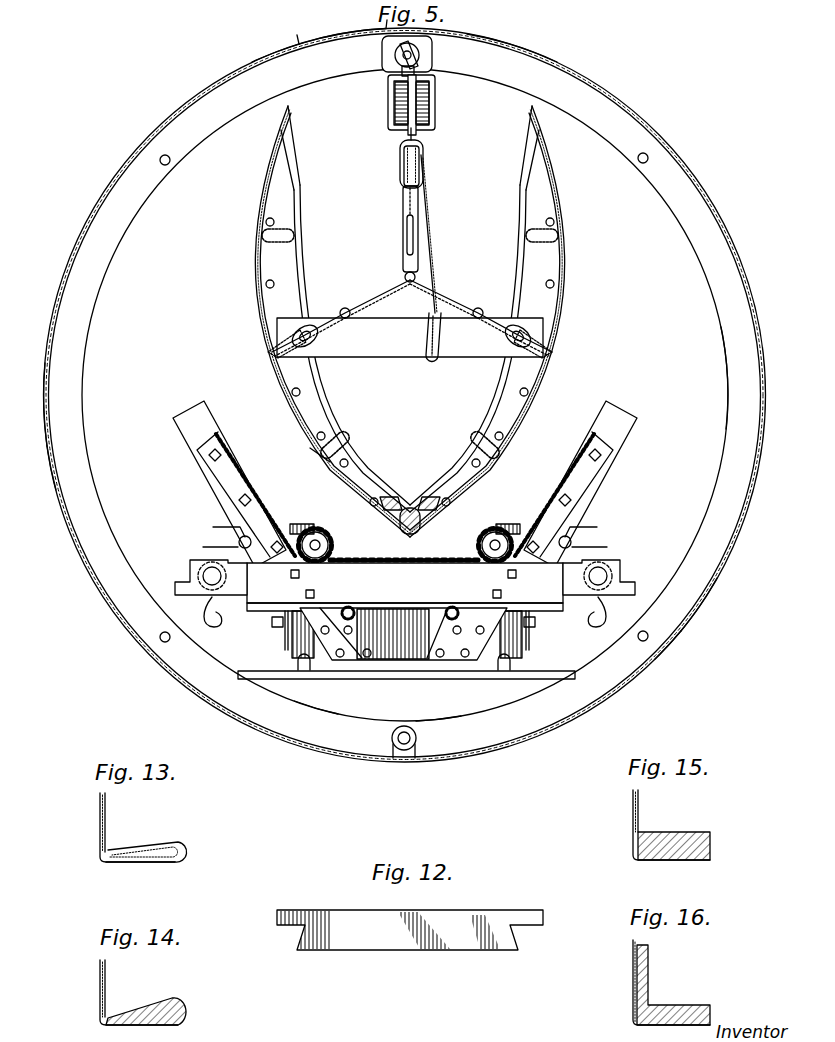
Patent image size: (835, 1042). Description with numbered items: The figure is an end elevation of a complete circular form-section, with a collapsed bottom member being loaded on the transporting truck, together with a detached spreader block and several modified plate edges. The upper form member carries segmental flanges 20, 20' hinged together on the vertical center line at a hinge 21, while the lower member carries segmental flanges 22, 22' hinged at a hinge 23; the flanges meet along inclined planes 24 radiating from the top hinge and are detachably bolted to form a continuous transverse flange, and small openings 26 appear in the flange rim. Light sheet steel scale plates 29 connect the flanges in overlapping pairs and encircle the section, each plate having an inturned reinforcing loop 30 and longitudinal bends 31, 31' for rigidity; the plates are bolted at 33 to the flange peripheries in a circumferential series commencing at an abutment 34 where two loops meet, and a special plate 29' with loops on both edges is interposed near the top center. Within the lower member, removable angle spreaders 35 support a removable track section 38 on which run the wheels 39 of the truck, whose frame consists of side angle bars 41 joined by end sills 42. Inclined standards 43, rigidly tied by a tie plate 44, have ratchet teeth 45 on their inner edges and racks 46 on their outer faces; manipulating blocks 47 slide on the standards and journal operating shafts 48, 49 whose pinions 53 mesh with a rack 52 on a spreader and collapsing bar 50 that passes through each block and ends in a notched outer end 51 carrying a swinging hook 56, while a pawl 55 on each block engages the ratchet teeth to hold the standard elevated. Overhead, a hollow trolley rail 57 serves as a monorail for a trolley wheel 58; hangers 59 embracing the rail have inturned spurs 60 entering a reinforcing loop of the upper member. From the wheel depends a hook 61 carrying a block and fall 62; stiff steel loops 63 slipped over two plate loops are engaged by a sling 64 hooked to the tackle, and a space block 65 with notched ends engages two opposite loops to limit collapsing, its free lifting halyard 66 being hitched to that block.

In FIG. 5, the segmental flange 20 is at (405, 395).
In FIG. 5, the segmental flange 20' is at (708, 378).
In FIG. 5, the hinge 21 is at (394, 55).
In FIG. 5, the segmental flange 22 is at (326, 321).
In FIG. 5, the segmental flange 22' is at (494, 321).
In FIG. 5, the hinge 23 is at (403, 749).
In FIG. 5, the inclined plane 24 is at (298, 180).
In FIG. 5, the hole 26 is at (170, 166).
In FIG. 5, the scale plate 29 is at (417, 395).
In FIG. 13, the scale plate 29 is at (118, 827).
In FIG. 14, the scale plate 29 is at (120, 992).
In FIG. 15, the scale plate 29 is at (652, 825).
In FIG. 16, the scale plate 29 is at (651, 982).
In FIG. 5, the special plate 29' is at (512, 40).
In FIG. 5, the reinforcing loop 30 is at (422, 60).
In FIG. 13, the reinforcing loop 30 is at (180, 846).
In FIG. 14, the reinforcing loop 30 is at (180, 1012).
In FIG. 15, the reinforcing loop 30 is at (712, 855).
In FIG. 16, the reinforcing loop 30 is at (712, 1018).
In FIG. 5, the longitudinal bend 31 is at (385, 323).
In FIG. 5, the longitudinal bend 31' is at (373, 341).
In FIG. 5, the bolt 33 is at (301, 392).
In FIG. 5, the abutment point 34 is at (300, 735).
In FIG. 5, the spreader 35 is at (470, 690).
In FIG. 5, the track section 38 is at (410, 680).
In FIG. 5, the wheel 39 is at (296, 652).
In FIG. 5, the side angle bar 41 is at (258, 613).
In FIG. 5, the end sill 42 is at (405, 583).
In FIG. 5, the inclined standard 43 is at (195, 408).
In FIG. 5, the tie plate 44 is at (425, 635).
In FIG. 5, the ratchet teeth 45 is at (295, 523).
In FIG. 5, the rack 46 is at (230, 474).
In FIG. 5, the manipulating block 47 is at (215, 548).
In FIG. 5, the operating shaft 48 is at (238, 540).
In FIG. 5, the operating shaft 49 is at (316, 540).
In FIG. 5, the spreader and collapsing bar 50 is at (215, 585).
In FIG. 5, the notched outer end 51 is at (185, 583).
In FIG. 5, the rack 52 is at (380, 559).
In FIG. 5, the pinion 53 is at (236, 527).
In FIG. 5, the pawl 55 is at (352, 608).
In FIG. 5, the swinging hook 56 is at (210, 612).
In FIG. 5, the trolley rail 57 is at (430, 112).
In FIG. 5, the trolley wheel 58 is at (395, 104).
In FIG. 5, the hanger 59 is at (436, 88).
In FIG. 5, the inturned spur 60 is at (416, 55).
In FIG. 5, the hook 61 is at (424, 143).
In FIG. 5, the block and fall 62 is at (403, 212).
In FIG. 5, the steel loop 63 is at (515, 326).
In FIG. 5, the sling 64 is at (383, 293).
In FIG. 5, the space block 65 is at (390, 357).
In FIG. 12, the space block 65 is at (398, 918).
In FIG. 5, the lifting halyard 66 is at (428, 318).